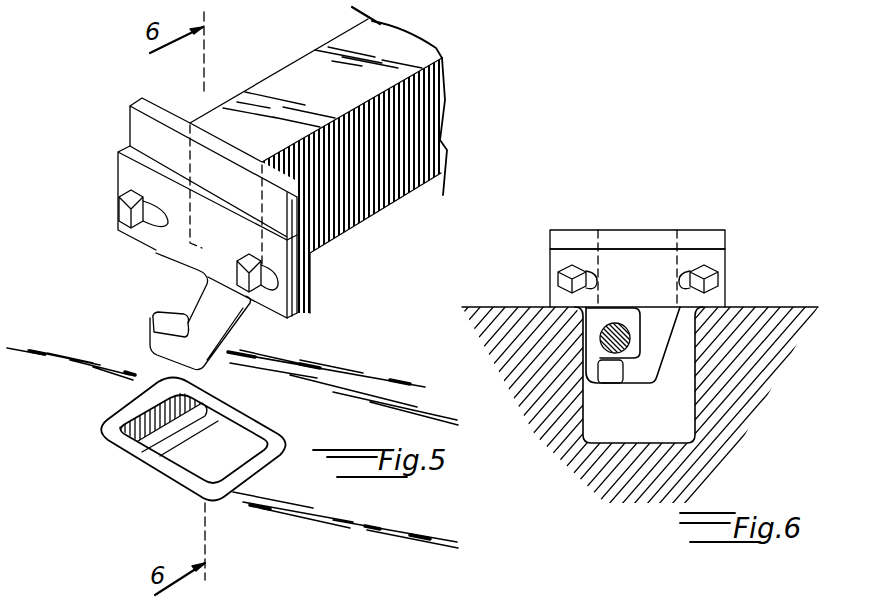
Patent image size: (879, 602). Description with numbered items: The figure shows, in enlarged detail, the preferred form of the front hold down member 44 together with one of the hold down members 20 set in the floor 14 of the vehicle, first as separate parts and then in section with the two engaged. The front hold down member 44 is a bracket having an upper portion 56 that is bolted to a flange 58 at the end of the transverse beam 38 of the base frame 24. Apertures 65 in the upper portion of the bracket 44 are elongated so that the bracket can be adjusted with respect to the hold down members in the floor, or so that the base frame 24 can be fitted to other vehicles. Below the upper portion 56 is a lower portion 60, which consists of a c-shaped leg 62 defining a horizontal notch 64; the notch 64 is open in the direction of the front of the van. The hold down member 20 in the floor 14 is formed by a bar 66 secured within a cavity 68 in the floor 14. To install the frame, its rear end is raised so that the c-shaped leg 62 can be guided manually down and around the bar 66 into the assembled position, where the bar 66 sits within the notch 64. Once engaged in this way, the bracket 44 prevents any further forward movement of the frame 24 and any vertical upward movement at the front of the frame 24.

In FIG. 5, the floor 14 is at (100, 373).
In FIG. 6, the floor 14 is at (540, 306).
In FIG. 5, the hold down member 20 is at (90, 410).
In FIG. 6, the hold down member 20 is at (690, 346).
In FIG. 5, the base frame 24 is at (443, 54).
In FIG. 5, the transverse beam 38 is at (444, 74).
In FIG. 6, the transverse beam 38 is at (668, 231).
In FIG. 5, the front hold down member 44 is at (118, 232).
In FIG. 5, the upper portion 56 is at (128, 171).
In FIG. 6, the upper portion 56 is at (560, 258).
In FIG. 5, the flange 58 is at (152, 147).
In FIG. 6, the flange 58 is at (558, 238).
In FIG. 5, the lower portion 60 is at (150, 330).
In FIG. 6, the lower portion 60 is at (600, 377).
In FIG. 5, the c-shaped leg 62 is at (187, 296).
In FIG. 6, the c-shaped leg 62 is at (637, 330).
In FIG. 5, the horizontal notch 64 is at (158, 320).
In FIG. 6, the horizontal notch 64 is at (600, 378).
In FIG. 5, the apertures 65 is at (237, 262).
In FIG. 6, the apertures 65 is at (678, 273).
In FIG. 5, the bar 66 is at (167, 448).
In FIG. 6, the bar 66 is at (622, 355).
In FIG. 5, the cavity 68 is at (200, 467).
In FIG. 6, the cavity 68 is at (605, 412).